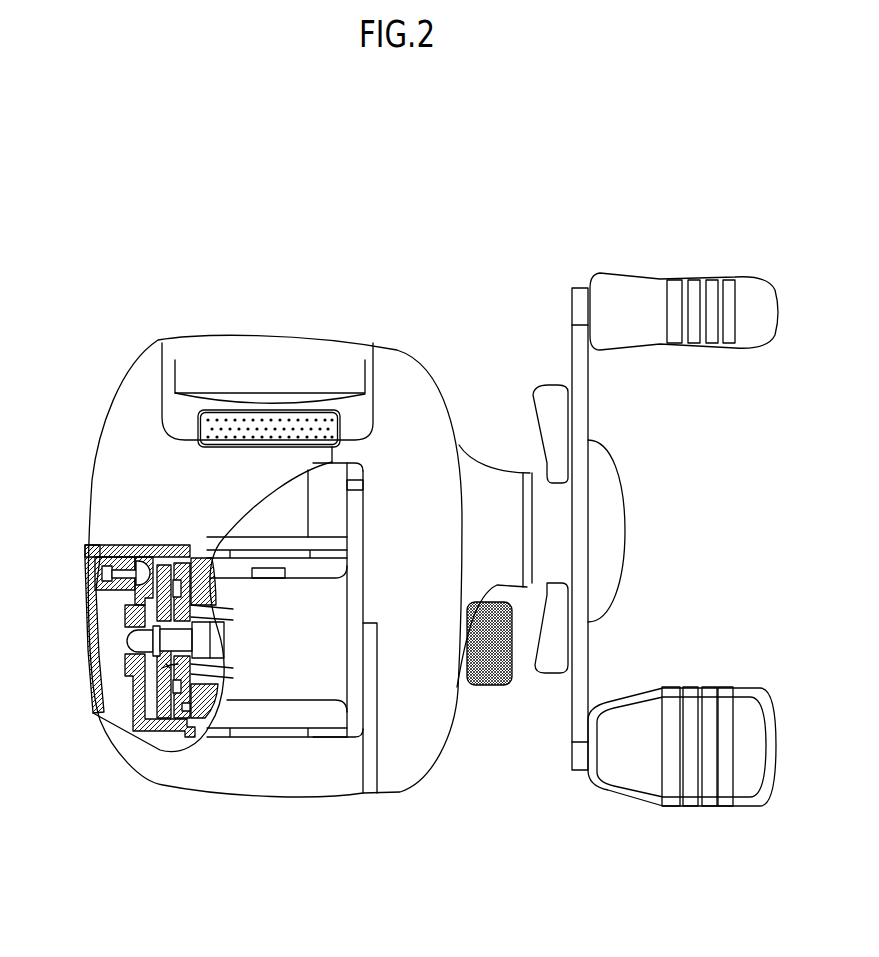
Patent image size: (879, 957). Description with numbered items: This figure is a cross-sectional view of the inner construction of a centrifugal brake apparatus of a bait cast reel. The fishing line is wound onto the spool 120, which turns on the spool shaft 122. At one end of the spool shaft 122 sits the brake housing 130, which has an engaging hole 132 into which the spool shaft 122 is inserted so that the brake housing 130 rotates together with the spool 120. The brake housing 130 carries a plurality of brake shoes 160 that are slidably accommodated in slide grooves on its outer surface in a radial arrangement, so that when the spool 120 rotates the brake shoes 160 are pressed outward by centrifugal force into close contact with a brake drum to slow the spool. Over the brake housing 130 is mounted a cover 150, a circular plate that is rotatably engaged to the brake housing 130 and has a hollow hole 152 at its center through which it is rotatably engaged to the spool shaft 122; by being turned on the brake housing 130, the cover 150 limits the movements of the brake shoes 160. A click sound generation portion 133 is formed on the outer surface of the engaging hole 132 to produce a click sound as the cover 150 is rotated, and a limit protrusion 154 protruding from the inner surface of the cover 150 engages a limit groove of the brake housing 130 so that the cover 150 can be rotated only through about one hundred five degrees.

The spool 120 is at (213, 693).
The spool shaft 122 is at (130, 641).
The brake housing 130 is at (187, 723).
The engaging hole 132 is at (165, 713).
The click sound generation portion 133 is at (167, 667).
The cover 150 is at (137, 543).
The hollow hole 152 is at (150, 613).
The limit protrusion 154 is at (160, 558).
The brake shoes 160 is at (172, 593).